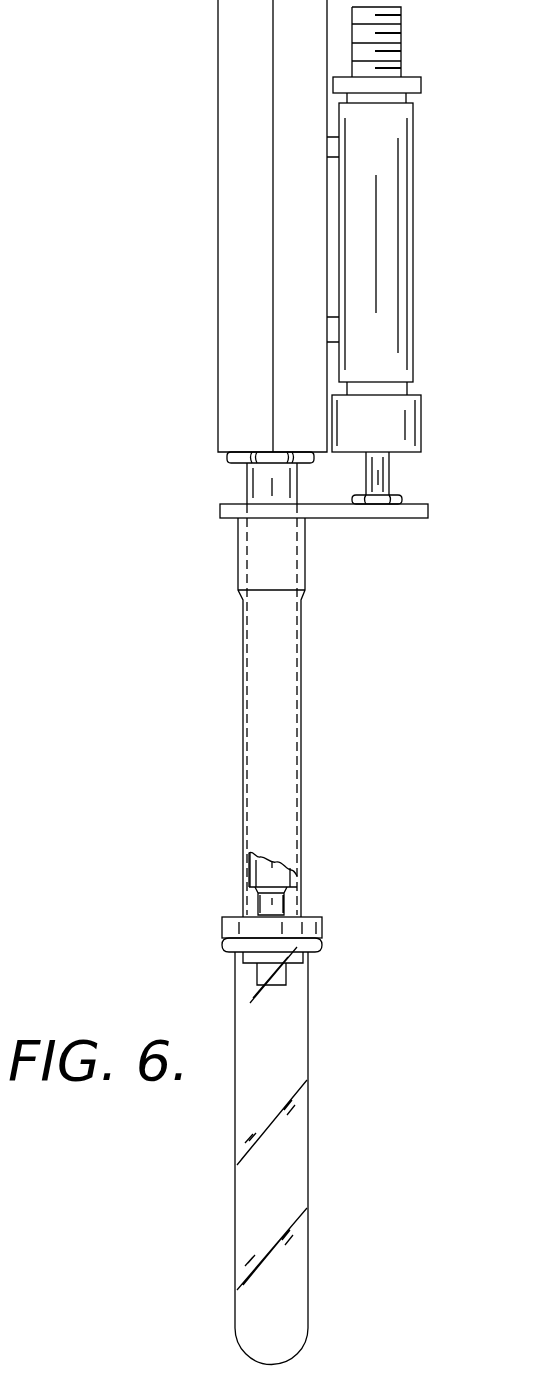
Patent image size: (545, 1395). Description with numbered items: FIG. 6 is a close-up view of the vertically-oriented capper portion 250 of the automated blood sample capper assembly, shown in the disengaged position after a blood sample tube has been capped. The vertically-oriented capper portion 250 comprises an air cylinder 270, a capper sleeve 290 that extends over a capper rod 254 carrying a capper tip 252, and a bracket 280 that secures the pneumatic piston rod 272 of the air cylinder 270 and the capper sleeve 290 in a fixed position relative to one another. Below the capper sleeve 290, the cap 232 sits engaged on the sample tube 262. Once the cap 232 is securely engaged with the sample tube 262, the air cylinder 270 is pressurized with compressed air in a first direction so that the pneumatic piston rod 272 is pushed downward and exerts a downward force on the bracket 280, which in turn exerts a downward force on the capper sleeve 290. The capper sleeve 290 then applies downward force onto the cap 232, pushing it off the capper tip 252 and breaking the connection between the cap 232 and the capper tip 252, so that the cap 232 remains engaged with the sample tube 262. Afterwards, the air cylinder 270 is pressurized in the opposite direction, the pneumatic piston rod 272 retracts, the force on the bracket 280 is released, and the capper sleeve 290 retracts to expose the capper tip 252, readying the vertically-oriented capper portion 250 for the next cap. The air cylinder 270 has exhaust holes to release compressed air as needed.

The vertically-oriented capper portion 250 is at (225, 188).
The air cylinder 270 is at (407, 223).
The pneumatic piston rod 272 is at (392, 478).
The bracket 280 is at (217, 511).
The capper sleeve 290 is at (249, 690).
The capper rod 254 is at (244, 873).
The capper tip 252 is at (254, 904).
The cap 232 is at (325, 922).
The sample tube 262 is at (297, 1152).